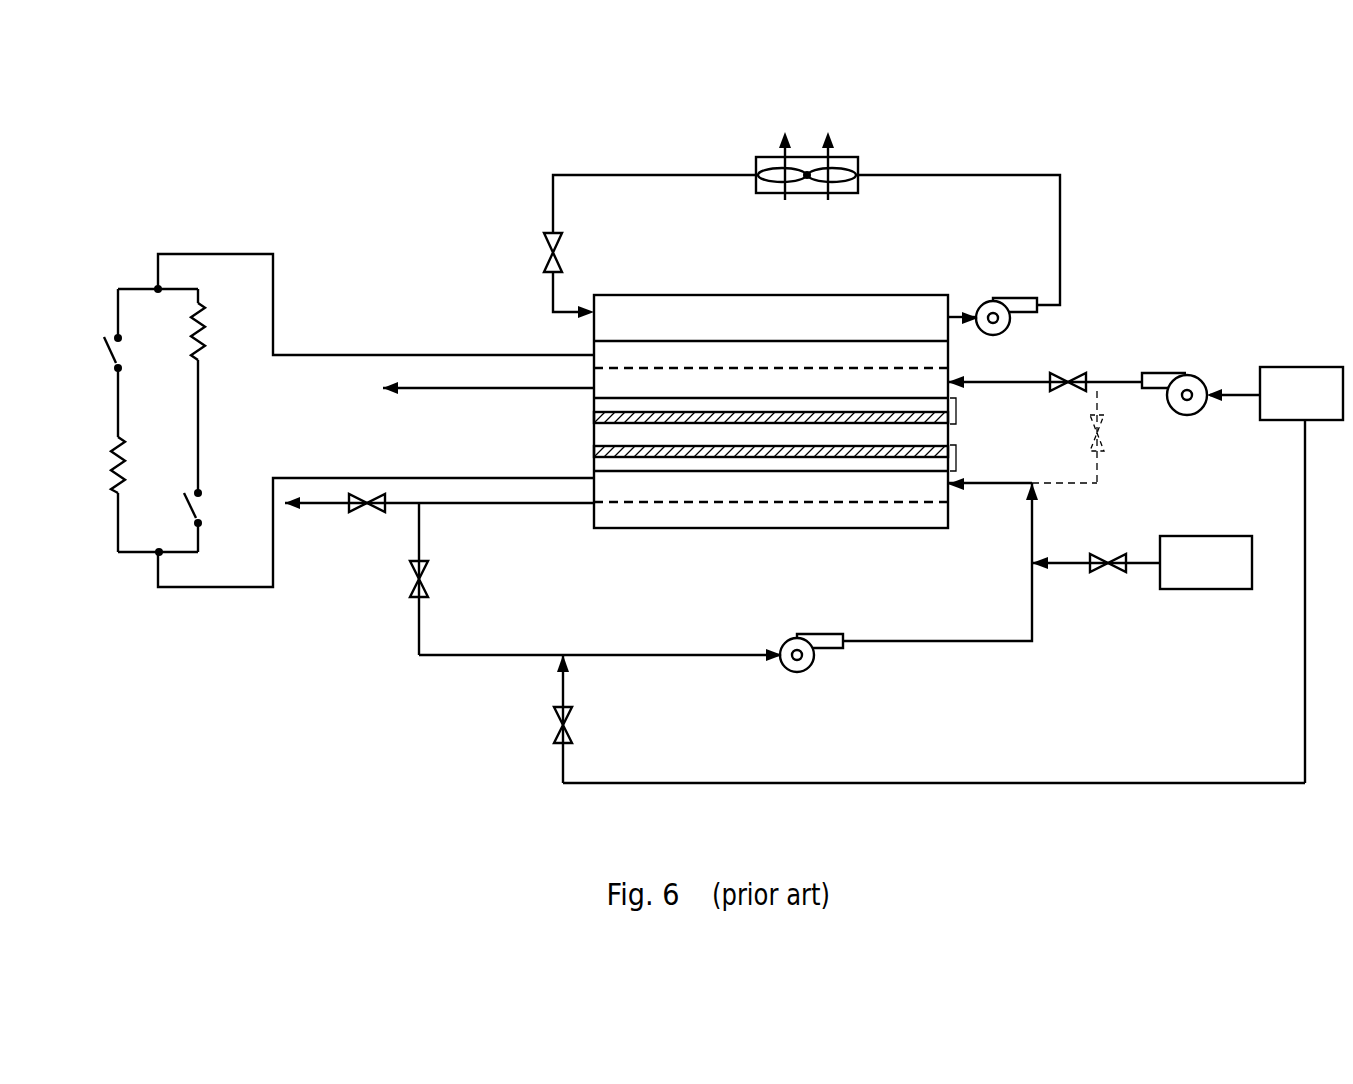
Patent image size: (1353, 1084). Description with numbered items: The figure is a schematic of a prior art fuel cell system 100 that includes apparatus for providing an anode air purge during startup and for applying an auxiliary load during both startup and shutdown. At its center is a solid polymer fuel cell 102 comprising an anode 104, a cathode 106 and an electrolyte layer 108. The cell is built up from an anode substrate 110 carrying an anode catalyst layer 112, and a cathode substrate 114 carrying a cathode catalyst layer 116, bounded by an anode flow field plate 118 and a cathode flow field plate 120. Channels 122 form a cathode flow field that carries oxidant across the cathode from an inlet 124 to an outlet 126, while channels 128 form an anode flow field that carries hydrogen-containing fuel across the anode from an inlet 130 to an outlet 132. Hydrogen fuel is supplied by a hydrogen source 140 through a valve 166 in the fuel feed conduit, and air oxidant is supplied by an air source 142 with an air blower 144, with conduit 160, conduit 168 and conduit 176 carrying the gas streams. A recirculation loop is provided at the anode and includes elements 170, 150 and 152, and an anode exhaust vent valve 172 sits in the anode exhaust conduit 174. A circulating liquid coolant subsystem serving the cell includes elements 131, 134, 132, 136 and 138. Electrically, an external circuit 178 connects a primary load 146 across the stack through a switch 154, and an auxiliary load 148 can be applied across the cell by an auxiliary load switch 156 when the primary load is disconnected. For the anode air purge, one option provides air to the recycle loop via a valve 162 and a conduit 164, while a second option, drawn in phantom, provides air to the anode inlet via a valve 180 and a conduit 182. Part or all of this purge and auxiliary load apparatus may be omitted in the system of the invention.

The fuel cell system 100 is at (1200, 270).
The solid polymer fuel cell 102 is at (886, 292).
The anode 104 is at (956, 459).
The cathode 106 is at (956, 412).
The electrolyte layer 108 is at (948, 434).
The anode substrate 110 is at (648, 467).
The anode catalyst layer 112 is at (594, 452).
The cathode substrate 114 is at (623, 403).
The cathode catalyst layer 116 is at (594, 417).
The anode flow field plate 118 is at (692, 517).
The cathode flow field plate 120 is at (678, 352).
The channels 122 is at (728, 368).
The inlet 124 is at (952, 380).
The outlet 126 is at (593, 388).
The channels 128 is at (745, 502).
The inlet 130 is at (950, 490).
The coolant subsystem element 131 is at (797, 310).
The outlet 132 is at (960, 173).
The coolant subsystem element 134 is at (1008, 300).
The coolant subsystem element 136 is at (808, 157).
The coolant subsystem element 138 is at (542, 249).
The hydrogen source 140 is at (1187, 578).
The air source 142 is at (1282, 409).
The air blower 144 is at (1178, 372).
The primary load 146 is at (112, 467).
The auxiliary load 148 is at (205, 340).
The recirculation loop element 150 is at (606, 653).
The recirculation loop element 152 is at (830, 634).
The switch 154 is at (122, 354).
The auxiliary load switch 156 is at (1079, 371).
The conduit 160 is at (1034, 380).
The valve 162 is at (574, 718).
The conduit 164 is at (934, 782).
The valve 166 is at (1112, 572).
The conduit 168 is at (1062, 568).
The recirculation loop element 170 is at (430, 576).
The anode exhaust vent valve 172 is at (372, 512).
The anode exhaust conduit 174 is at (320, 510).
The conduit 176 is at (410, 395).
The external circuit 178 is at (215, 590).
The valve 180 is at (1106, 430).
The conduit 182 is at (1106, 470).